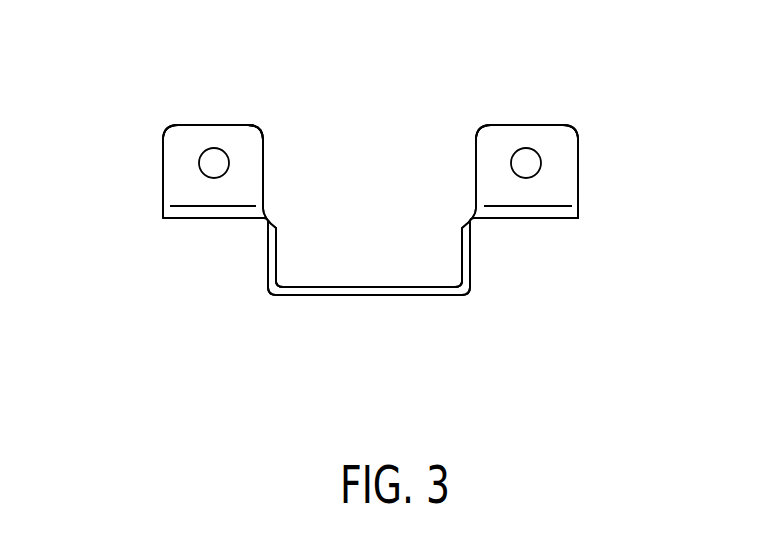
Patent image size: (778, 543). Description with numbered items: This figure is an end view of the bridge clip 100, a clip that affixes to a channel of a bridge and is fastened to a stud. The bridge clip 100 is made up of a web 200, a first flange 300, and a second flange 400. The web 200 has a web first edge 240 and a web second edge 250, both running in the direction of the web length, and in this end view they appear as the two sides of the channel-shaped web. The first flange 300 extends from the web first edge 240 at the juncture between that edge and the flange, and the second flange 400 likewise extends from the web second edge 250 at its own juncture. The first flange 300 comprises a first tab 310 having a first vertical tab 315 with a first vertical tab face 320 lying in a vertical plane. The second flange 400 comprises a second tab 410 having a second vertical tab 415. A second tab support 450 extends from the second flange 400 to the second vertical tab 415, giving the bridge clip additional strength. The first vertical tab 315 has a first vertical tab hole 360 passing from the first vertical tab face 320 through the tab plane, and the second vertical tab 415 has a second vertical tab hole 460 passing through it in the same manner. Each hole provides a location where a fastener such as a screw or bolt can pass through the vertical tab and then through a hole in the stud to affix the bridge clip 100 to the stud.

The bridge clip 100 is at (380, 75).
The web 200 is at (377, 316).
The web first edge 240 is at (273, 295).
The web second edge 250 is at (465, 295).
The first flange 300 is at (299, 250).
The second flange 400 is at (496, 268).
The first tab 310 is at (112, 249).
The first vertical tab 315 is at (192, 104).
The first vertical tab face 320 is at (235, 128).
The first vertical tab hole 360 is at (200, 160).
The second tab 410 is at (620, 241).
The second vertical tab 415 is at (512, 102).
The second tab support 450 is at (556, 240).
The second vertical tab hole 460 is at (541, 168).